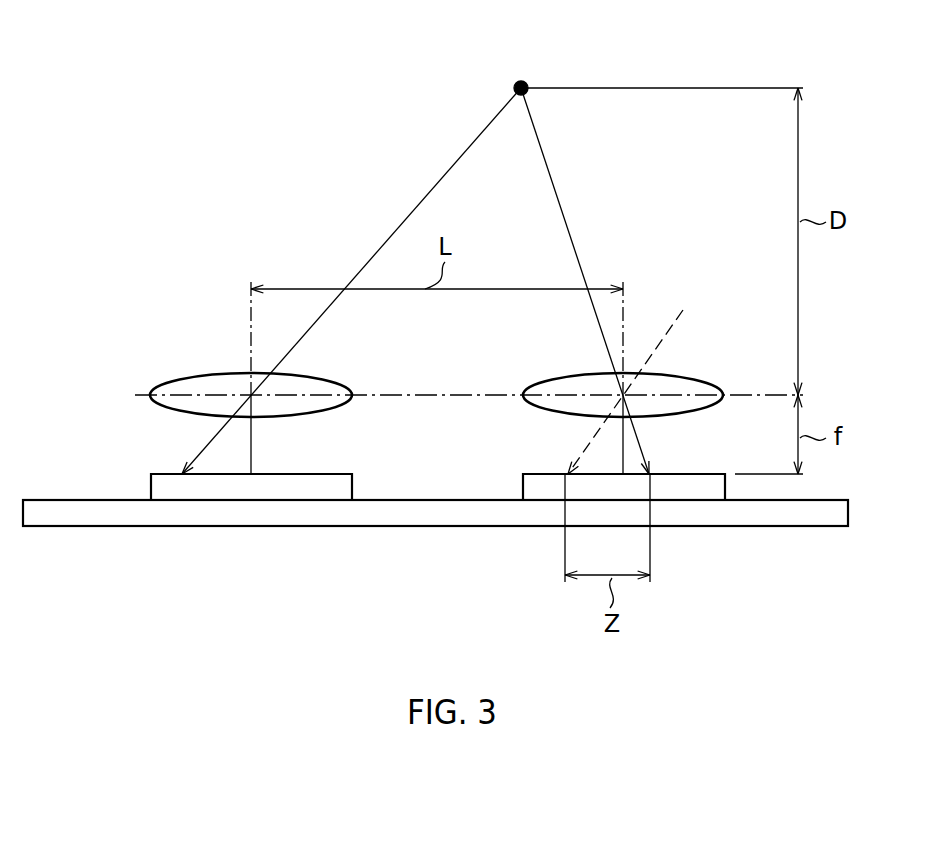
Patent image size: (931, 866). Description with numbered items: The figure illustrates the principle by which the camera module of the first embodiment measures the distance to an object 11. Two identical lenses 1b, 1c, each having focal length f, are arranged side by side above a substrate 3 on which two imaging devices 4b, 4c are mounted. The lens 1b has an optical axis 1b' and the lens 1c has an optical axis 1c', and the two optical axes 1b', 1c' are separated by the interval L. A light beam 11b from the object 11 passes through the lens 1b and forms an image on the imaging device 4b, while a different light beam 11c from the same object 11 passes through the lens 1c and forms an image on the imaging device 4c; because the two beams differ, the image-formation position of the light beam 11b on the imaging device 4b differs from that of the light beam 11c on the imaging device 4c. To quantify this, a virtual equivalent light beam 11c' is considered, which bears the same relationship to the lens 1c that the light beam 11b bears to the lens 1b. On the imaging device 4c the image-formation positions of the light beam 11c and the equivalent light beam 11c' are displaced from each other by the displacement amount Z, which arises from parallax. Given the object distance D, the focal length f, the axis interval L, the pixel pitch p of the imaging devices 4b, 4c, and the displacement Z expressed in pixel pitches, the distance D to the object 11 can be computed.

The substrate 3 is at (818, 517).
The object 11 is at (524, 80).
The light beam 11b is at (428, 190).
The light beam 11c is at (585, 281).
The equivalent light beam 11c' is at (580, 392).
The lens 1b is at (247, 371).
The optical axis 1b' is at (229, 361).
The lens 1c is at (624, 371).
The optical axis 1c' is at (644, 361).
The imaging device 4b is at (165, 474).
The imaging device 4c is at (712, 474).